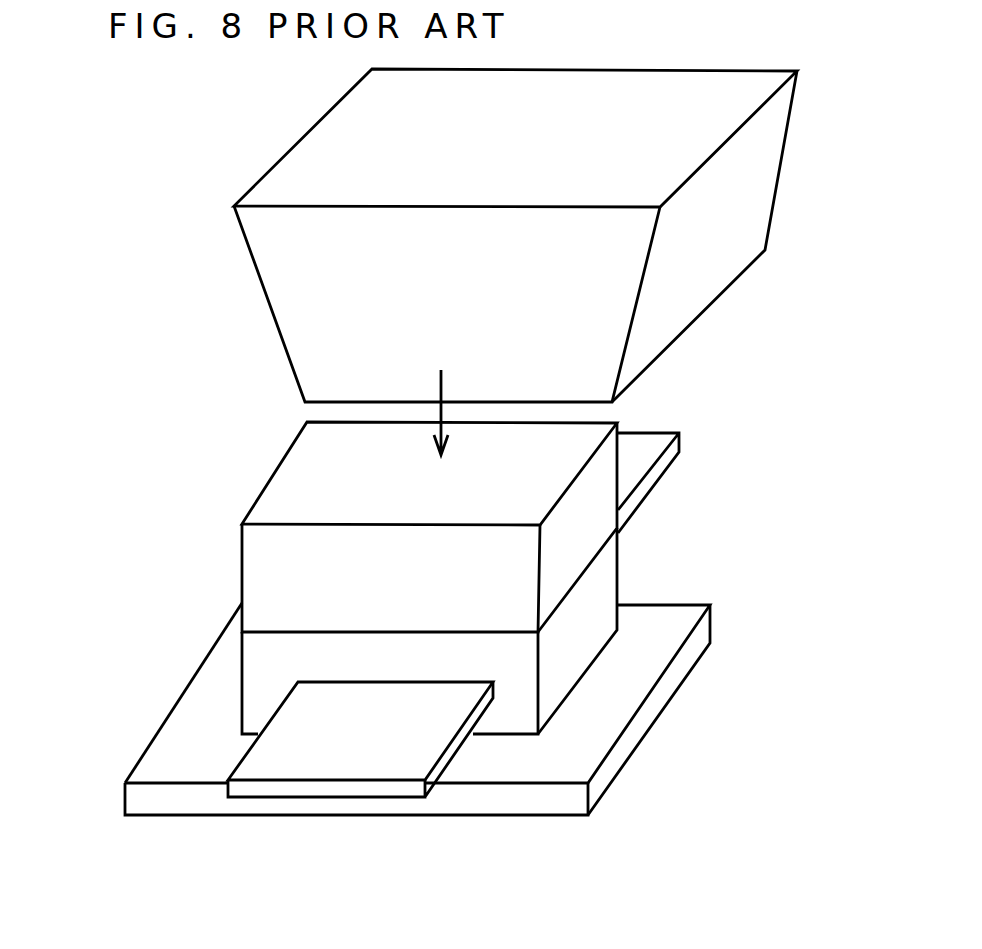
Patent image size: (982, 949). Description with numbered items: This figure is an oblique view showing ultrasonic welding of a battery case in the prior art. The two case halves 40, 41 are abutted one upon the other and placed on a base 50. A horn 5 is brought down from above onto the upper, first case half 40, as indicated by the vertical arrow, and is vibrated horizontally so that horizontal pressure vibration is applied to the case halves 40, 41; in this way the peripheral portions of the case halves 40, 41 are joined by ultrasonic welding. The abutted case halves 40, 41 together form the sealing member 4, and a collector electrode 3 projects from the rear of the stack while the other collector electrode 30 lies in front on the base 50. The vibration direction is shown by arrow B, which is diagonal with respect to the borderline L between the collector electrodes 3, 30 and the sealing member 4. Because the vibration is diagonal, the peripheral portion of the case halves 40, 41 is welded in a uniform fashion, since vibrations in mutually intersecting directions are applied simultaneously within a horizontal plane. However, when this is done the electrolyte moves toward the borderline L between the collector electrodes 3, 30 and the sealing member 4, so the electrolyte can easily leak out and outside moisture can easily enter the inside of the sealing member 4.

The horn 5 is at (682, 300).
The collector electrode 3 is at (643, 459).
The sealing member 4 is at (341, 578).
The first case half 40 is at (262, 568).
The second case half 41 is at (257, 668).
The collector electrode 30 is at (319, 755).
The base 50 is at (590, 728).
The borderline L is at (410, 683).
The arrow B (vibration direction) B is at (662, 582).